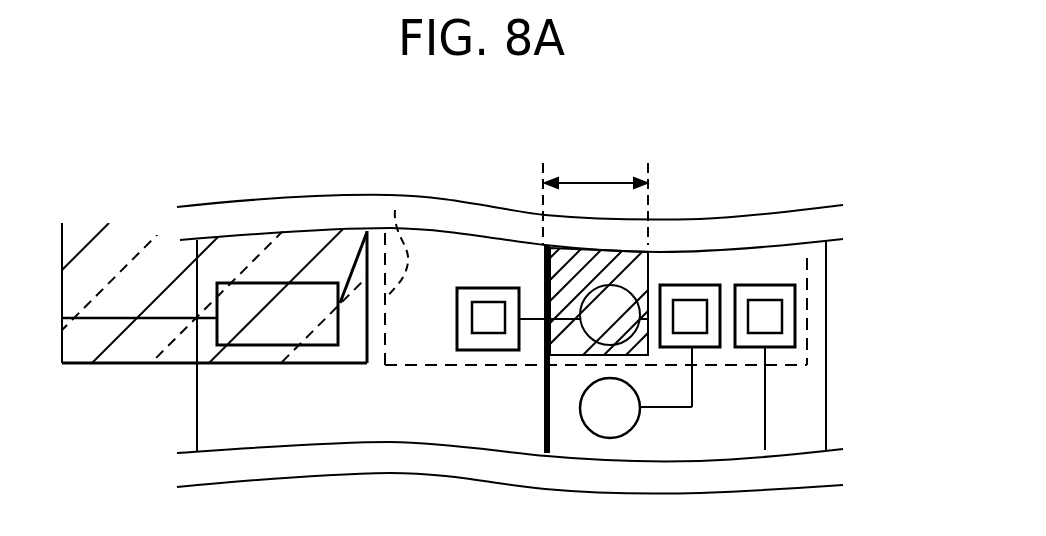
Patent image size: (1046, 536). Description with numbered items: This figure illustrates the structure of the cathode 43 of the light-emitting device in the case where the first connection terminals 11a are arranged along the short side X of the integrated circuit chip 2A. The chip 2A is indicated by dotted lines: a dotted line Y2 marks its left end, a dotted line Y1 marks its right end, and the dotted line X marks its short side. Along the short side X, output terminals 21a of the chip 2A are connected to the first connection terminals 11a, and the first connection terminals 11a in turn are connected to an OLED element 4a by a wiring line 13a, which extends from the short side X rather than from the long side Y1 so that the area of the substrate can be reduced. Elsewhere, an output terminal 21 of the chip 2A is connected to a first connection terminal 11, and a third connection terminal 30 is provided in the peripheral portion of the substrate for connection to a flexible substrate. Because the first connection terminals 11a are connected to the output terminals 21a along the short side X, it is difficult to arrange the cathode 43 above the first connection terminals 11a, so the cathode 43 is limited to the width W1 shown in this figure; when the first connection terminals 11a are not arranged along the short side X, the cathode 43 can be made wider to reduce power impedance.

The integrated circuit chip 2A is at (486, 184).
The dotted line Y2 is at (395, 210).
The width W1 is at (595, 197).
The cathode 43 is at (622, 262).
The output terminal 21 is at (489, 300).
The output terminal 21a is at (692, 300).
The long side Y1 is at (807, 303).
The first connection terminal 11a is at (750, 348).
The OLED element 4a is at (637, 425).
The wiring line 13a is at (680, 408).
The third connection terminal 30 is at (259, 347).
The first connection terminal 11 is at (485, 352).
The short side X is at (418, 372).